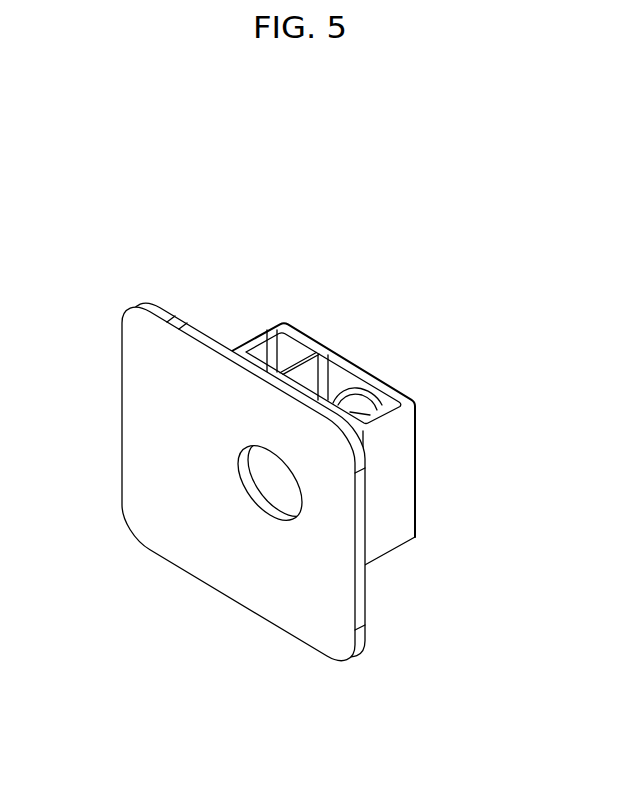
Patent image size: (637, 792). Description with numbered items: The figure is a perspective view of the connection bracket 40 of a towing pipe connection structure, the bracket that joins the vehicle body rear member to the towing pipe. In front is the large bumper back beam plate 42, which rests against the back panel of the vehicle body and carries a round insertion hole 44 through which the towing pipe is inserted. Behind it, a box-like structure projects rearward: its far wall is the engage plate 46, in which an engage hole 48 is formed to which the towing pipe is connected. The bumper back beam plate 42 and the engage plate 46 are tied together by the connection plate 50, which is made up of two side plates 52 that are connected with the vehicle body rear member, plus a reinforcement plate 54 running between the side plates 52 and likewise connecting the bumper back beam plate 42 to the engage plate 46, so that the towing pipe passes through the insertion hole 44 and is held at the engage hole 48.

The connection bracket 40 is at (268, 501).
The bumper back beam plate 42 is at (142, 448).
The insertion hole 44 is at (290, 491).
The engage plate 46 is at (402, 424).
The engage hole 48 is at (362, 416).
The connection plate 50 is at (350, 331).
The side plates 52 is at (257, 347).
The reinforcement plate 54 is at (310, 367).